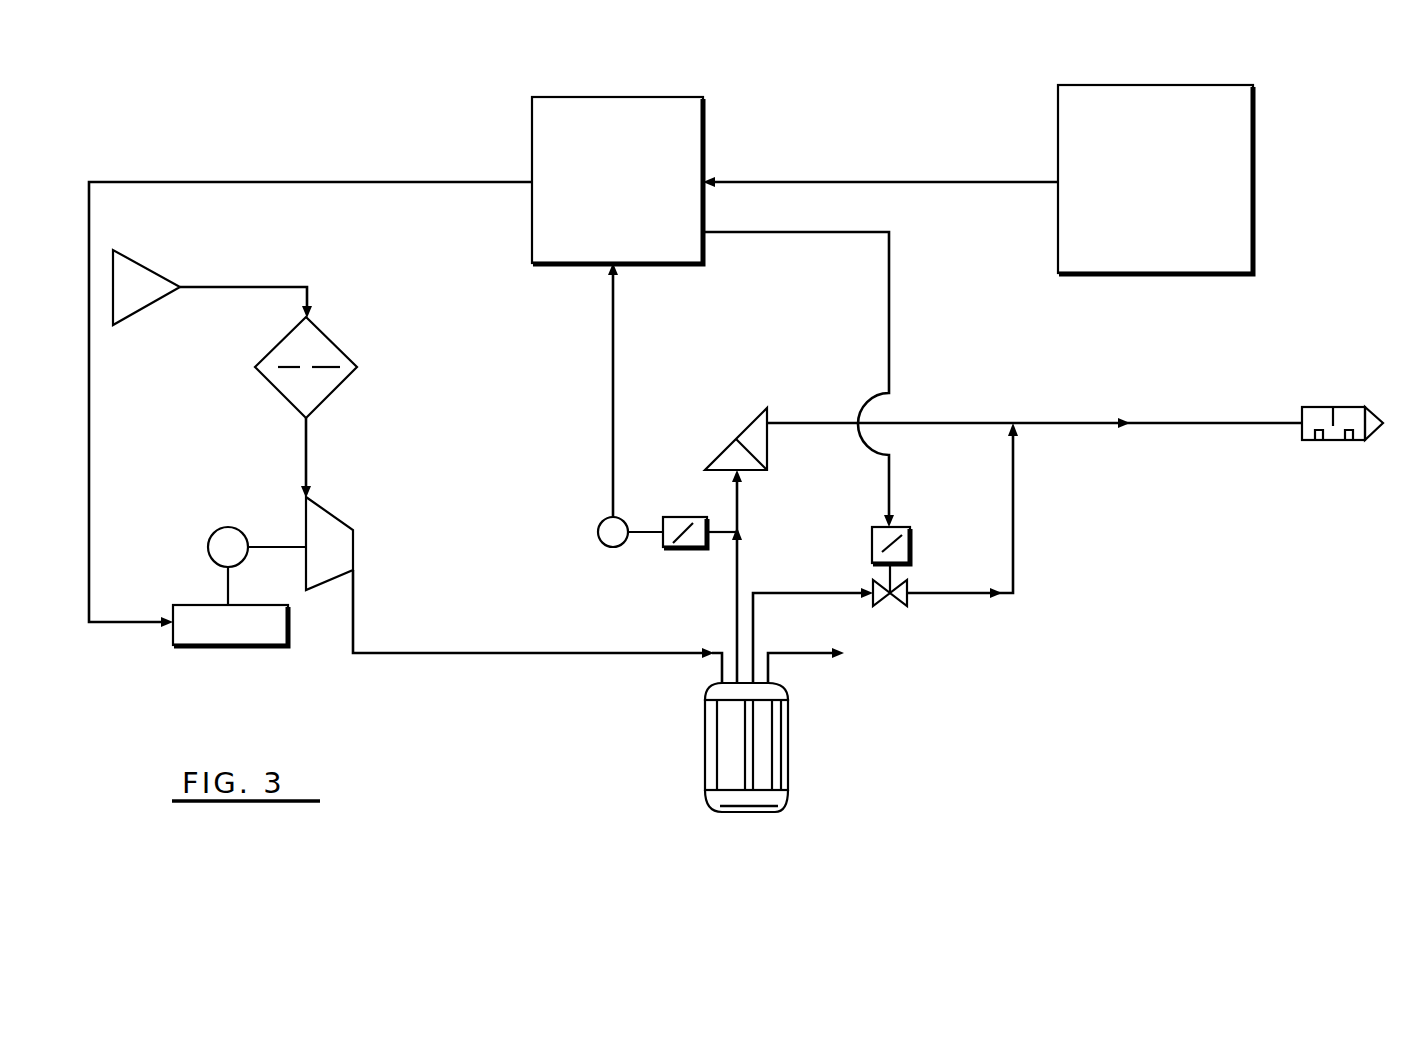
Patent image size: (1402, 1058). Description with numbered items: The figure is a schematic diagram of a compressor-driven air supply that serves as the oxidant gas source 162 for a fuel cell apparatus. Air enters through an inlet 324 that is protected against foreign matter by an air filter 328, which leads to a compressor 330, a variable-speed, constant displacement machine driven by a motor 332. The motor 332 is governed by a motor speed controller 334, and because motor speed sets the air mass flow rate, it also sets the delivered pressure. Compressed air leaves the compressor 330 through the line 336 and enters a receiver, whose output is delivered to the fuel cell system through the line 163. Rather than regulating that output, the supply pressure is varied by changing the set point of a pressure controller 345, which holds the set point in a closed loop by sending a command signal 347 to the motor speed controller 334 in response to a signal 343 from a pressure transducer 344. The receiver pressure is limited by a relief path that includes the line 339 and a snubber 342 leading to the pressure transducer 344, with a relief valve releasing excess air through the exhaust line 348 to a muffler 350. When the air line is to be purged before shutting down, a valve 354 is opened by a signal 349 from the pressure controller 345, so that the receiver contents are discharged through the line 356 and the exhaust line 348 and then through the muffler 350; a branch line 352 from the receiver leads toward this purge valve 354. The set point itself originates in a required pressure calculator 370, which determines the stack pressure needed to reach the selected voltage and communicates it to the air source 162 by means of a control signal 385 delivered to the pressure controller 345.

The oxidant gas source 162 is at (1112, 681).
The line 163 is at (810, 655).
The inlet 324 is at (130, 283).
The air filter 328 is at (307, 347).
The compressor 330 is at (323, 540).
The motor 332 is at (205, 548).
The motor speed controller 334 is at (215, 628).
The line 336 is at (455, 652).
The line 339 is at (742, 563).
The snubber 342 is at (692, 527).
The signal 343 is at (615, 308).
The pressure transducer 344 is at (598, 536).
The pressure controller 345 is at (693, 108).
The command signal 347 is at (168, 182).
The exhaust line 348 is at (1060, 423).
The signal 349 is at (889, 290).
The muffler 350 is at (1325, 442).
The bypass line 352 is at (829, 592).
The valve 354 is at (893, 548).
The line 356 is at (1013, 512).
The calculator 370 is at (1155, 181).
The control signal 385 is at (917, 178).